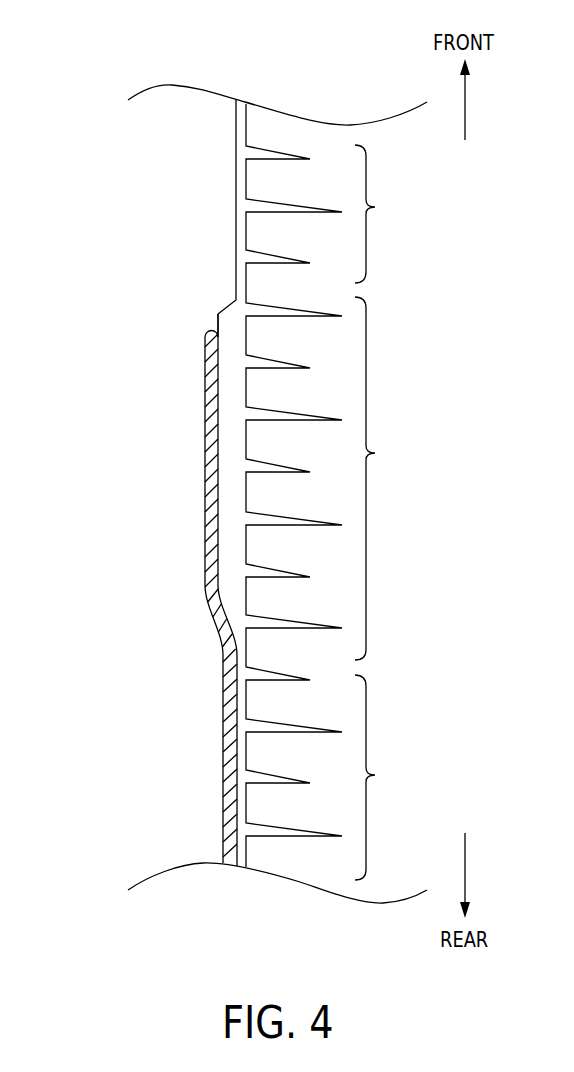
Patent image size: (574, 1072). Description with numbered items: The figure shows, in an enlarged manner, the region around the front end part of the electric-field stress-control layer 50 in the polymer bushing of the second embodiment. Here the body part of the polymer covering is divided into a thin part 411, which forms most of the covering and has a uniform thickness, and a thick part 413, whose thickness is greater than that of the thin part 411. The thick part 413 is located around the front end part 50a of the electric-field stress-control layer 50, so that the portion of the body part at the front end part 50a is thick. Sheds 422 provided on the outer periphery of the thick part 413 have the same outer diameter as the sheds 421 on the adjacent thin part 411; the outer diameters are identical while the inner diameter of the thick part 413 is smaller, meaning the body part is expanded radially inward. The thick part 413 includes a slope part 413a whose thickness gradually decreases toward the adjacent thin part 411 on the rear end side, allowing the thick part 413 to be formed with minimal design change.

The thin part 411 is at (237, 235).
The thick part 413 is at (233, 440).
The slope part 413a is at (233, 620).
The shed 421 is at (338, 492).
The shed 422 is at (337, 475).
The electric-field stress-control layer 50 is at (223, 798).
The front end part 50a is at (201, 318).